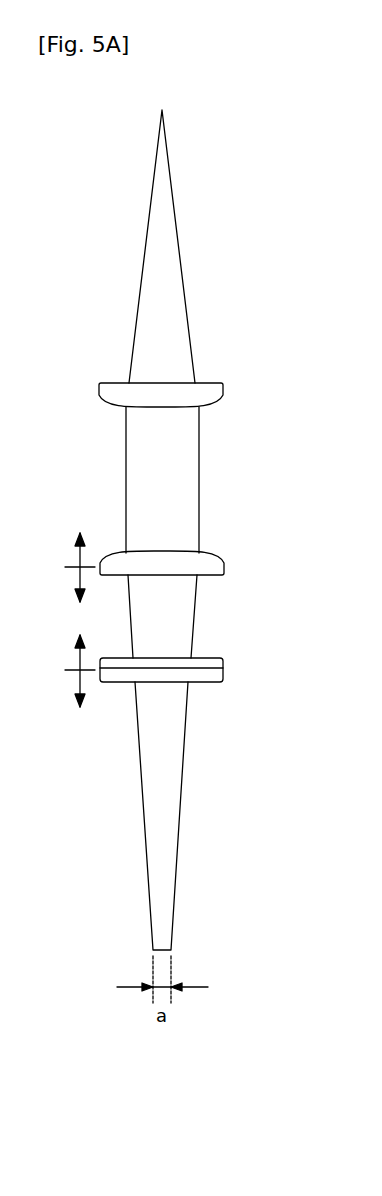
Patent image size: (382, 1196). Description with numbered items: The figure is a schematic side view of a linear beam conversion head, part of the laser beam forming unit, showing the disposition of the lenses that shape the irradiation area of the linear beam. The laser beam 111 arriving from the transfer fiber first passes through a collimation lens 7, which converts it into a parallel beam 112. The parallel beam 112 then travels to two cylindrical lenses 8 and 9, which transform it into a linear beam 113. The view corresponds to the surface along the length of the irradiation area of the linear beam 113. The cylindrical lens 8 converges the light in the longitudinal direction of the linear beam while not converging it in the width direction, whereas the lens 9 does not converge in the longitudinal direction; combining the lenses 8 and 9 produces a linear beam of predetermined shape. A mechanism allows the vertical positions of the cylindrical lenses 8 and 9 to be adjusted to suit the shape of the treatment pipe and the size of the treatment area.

The laser beam 111 is at (176, 295).
The collimation lens 7 is at (216, 393).
The parallel beam 112 is at (187, 483).
The cylindrical lens 8 is at (217, 563).
The linear beam 113 is at (182, 627).
The cylindrical lens 9 is at (213, 674).